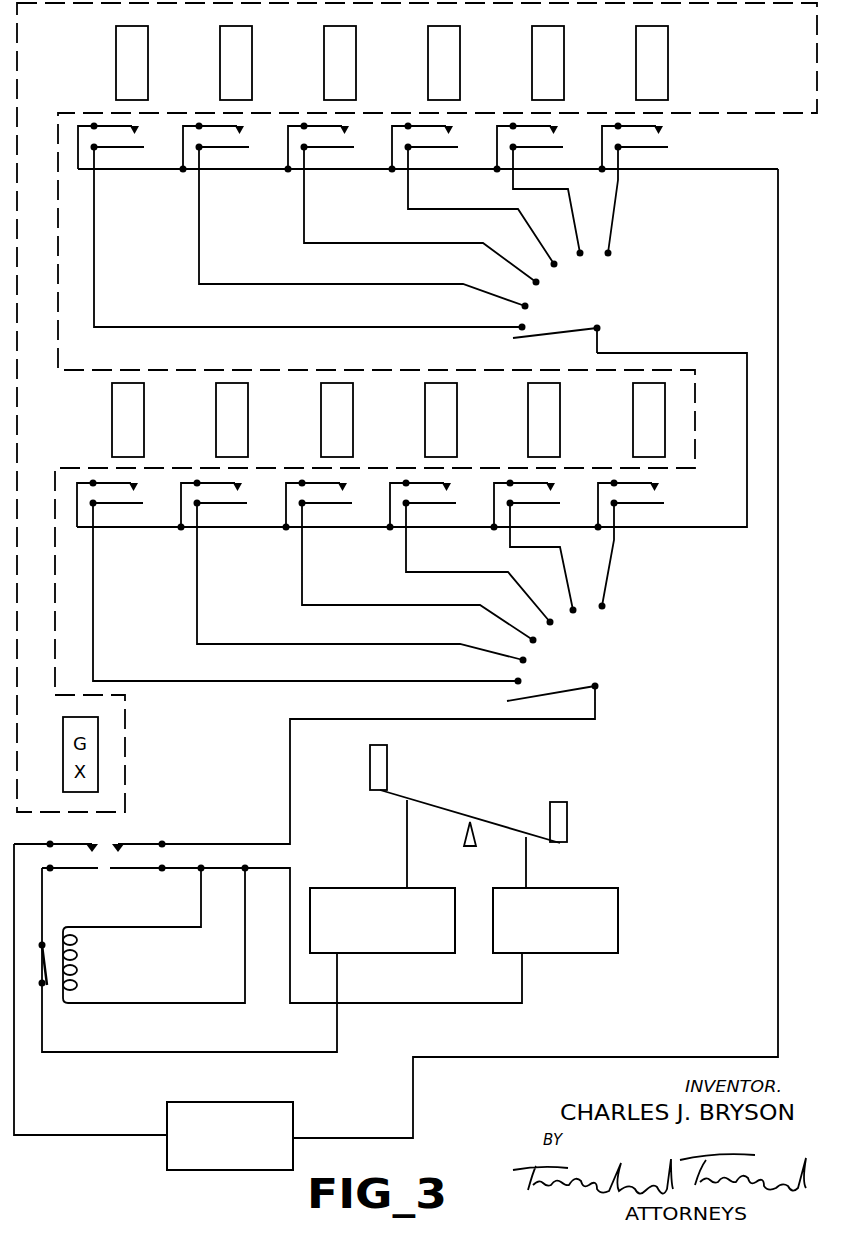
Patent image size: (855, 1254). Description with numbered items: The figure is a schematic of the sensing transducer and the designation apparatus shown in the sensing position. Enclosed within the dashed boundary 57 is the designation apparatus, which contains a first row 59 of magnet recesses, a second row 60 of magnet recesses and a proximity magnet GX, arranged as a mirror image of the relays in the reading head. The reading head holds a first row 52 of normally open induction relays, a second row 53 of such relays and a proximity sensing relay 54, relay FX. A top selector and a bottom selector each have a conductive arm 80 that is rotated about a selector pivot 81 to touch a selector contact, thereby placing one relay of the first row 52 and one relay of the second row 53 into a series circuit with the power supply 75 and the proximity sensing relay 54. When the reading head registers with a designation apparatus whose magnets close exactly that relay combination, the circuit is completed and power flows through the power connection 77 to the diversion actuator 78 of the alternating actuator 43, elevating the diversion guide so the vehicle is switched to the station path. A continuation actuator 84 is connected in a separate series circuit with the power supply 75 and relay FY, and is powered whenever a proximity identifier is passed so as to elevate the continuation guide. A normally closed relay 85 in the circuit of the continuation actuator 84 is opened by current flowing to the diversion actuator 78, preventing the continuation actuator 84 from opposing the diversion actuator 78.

The alternating actuator 43 is at (490, 937).
The first row of induction relays 52 is at (722, 145).
The second row of induction relays 53 is at (727, 492).
The proximity sensing relay 54 is at (165, 822).
The boundary 57 is at (18, 72).
The first row of magnet recesses 59 is at (697, 72).
The second row of magnet recesses 60 is at (678, 422).
The power supply 75 is at (166, 1118).
The power connection 77 is at (523, 988).
The diversion actuator 78 is at (583, 953).
The conductive arm 80 is at (537, 283).
The selector pivot 81 is at (600, 328).
The continuation actuator 84 is at (385, 953).
The normally closed relay 85 is at (45, 988).